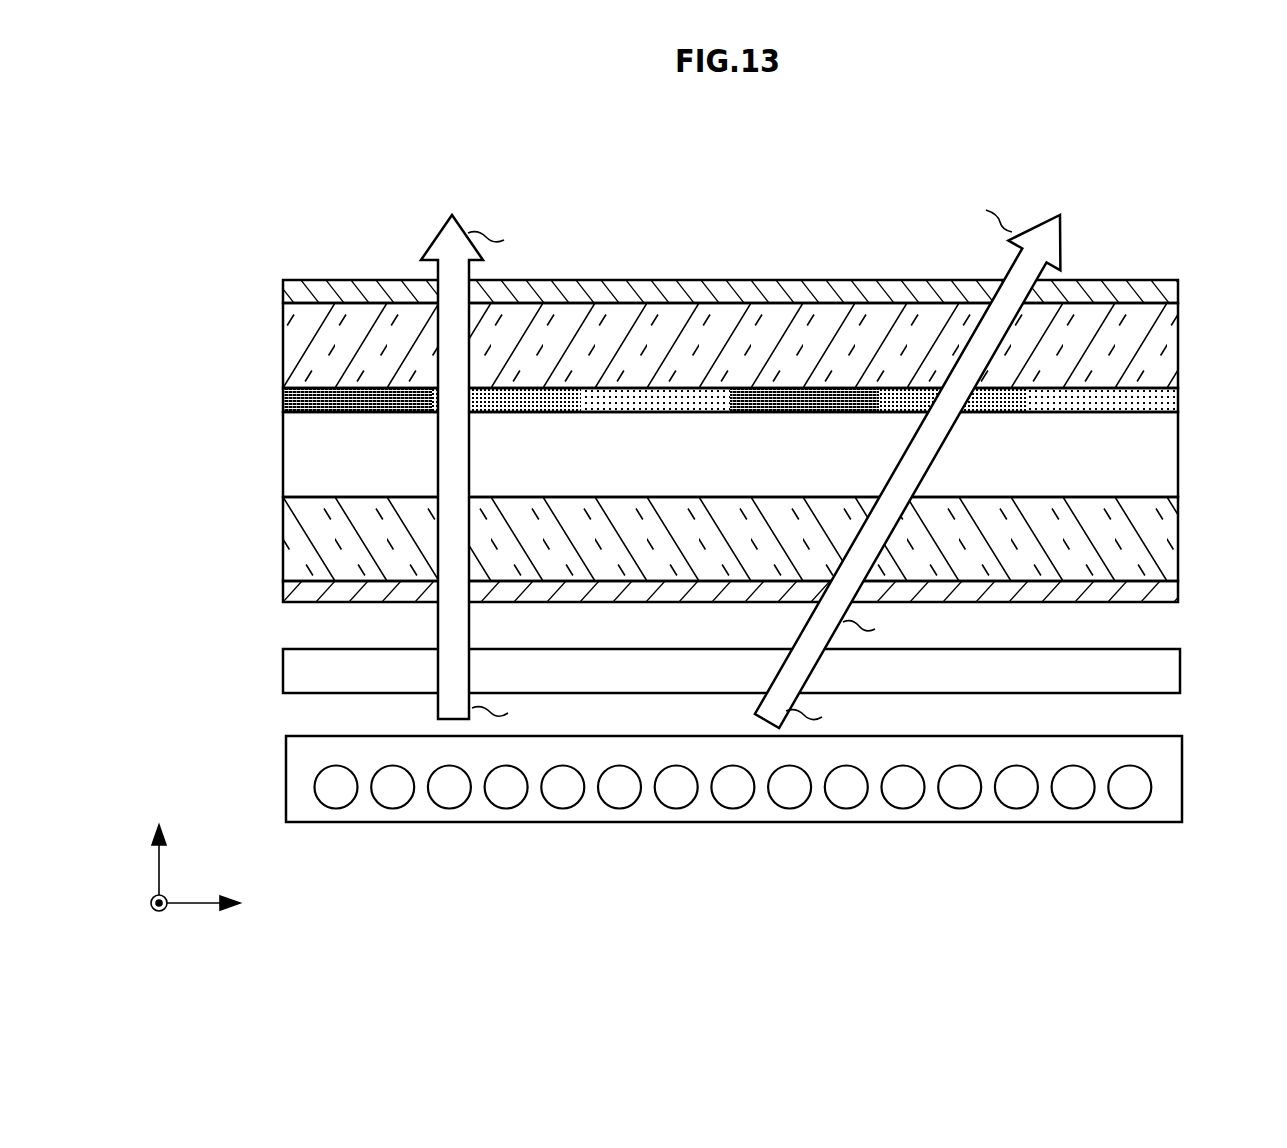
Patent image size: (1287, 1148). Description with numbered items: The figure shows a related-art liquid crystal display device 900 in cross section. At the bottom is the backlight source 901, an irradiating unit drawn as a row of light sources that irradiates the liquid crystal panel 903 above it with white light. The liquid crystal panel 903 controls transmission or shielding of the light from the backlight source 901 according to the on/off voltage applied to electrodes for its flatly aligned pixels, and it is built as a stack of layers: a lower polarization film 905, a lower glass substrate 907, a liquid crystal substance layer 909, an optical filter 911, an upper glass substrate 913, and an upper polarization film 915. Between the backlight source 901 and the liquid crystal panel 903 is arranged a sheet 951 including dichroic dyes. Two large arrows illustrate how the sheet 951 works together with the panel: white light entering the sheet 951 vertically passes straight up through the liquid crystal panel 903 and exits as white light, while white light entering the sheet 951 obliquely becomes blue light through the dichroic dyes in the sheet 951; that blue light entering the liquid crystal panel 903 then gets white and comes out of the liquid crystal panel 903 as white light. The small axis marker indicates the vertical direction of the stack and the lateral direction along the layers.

The liquid crystal display device 900 is at (751, 191).
The backlight source 901 is at (1184, 778).
The liquid crystal panel 903 is at (252, 433).
The polarization film 905 is at (1181, 591).
The glass substrate 907 is at (1181, 540).
The liquid crystal substance layer 909 is at (1181, 452).
The optical filter 911 is at (1181, 399).
The glass substrate 913 is at (1181, 346).
The polarization film 915 is at (1181, 291).
The sheet 951 is at (1182, 672).